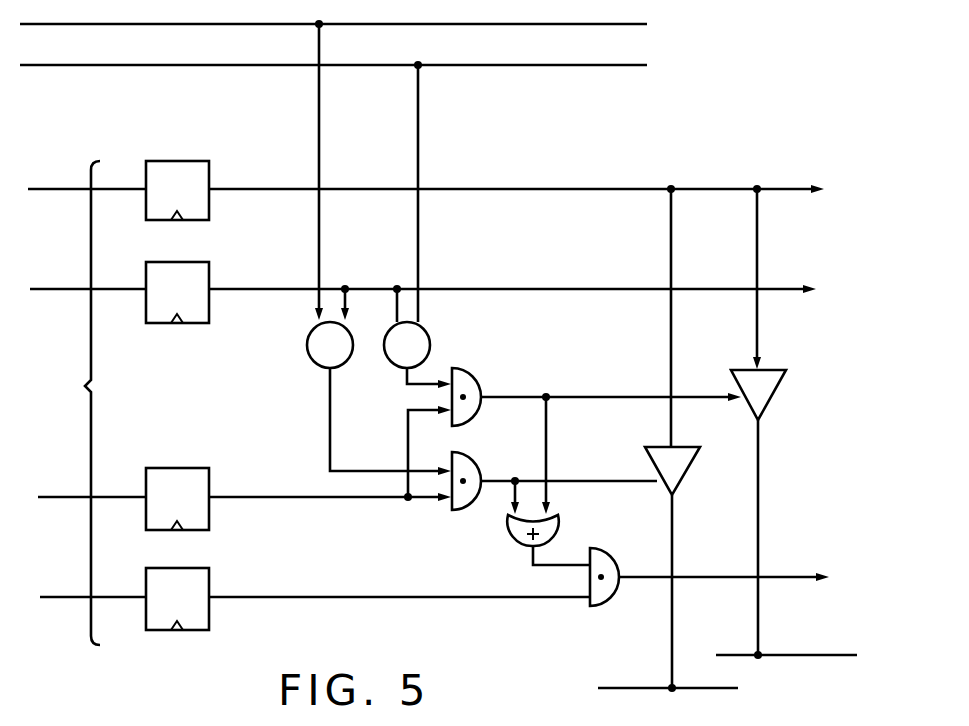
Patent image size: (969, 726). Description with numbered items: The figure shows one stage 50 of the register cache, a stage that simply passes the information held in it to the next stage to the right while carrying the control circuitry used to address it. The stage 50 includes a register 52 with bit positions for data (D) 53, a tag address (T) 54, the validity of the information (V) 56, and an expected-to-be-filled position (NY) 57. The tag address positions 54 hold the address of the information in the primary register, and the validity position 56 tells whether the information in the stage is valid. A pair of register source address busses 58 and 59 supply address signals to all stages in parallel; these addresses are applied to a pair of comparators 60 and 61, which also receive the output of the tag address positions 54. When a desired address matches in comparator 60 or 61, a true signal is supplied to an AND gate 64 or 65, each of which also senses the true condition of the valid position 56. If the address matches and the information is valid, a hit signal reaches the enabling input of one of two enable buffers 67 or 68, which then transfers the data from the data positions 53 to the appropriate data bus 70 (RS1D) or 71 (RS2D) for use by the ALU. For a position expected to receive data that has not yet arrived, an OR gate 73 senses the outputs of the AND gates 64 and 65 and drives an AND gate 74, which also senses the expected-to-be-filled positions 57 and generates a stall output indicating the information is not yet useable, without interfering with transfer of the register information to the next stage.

The stage 50 is at (222, 407).
The register 52 is at (70, 403).
The data positions 53 is at (210, 176).
The tag address positions 54 is at (210, 279).
The validity position 56 is at (210, 488).
The expected to be filled positions 57 is at (210, 576).
The register source address bus 58 is at (488, 22).
The register source address bus 59 is at (490, 63).
The comparator 60 is at (306, 346).
The comparator 61 is at (428, 338).
The AND gate 64 is at (468, 516).
The AND gate 65 is at (477, 383).
The enable buffer 67 is at (690, 468).
The enable buffer 68 is at (777, 388).
The data bus 70 is at (637, 687).
The data bus 71 is at (728, 653).
The OR gate 73 is at (560, 525).
The AND gate 74 is at (612, 552).